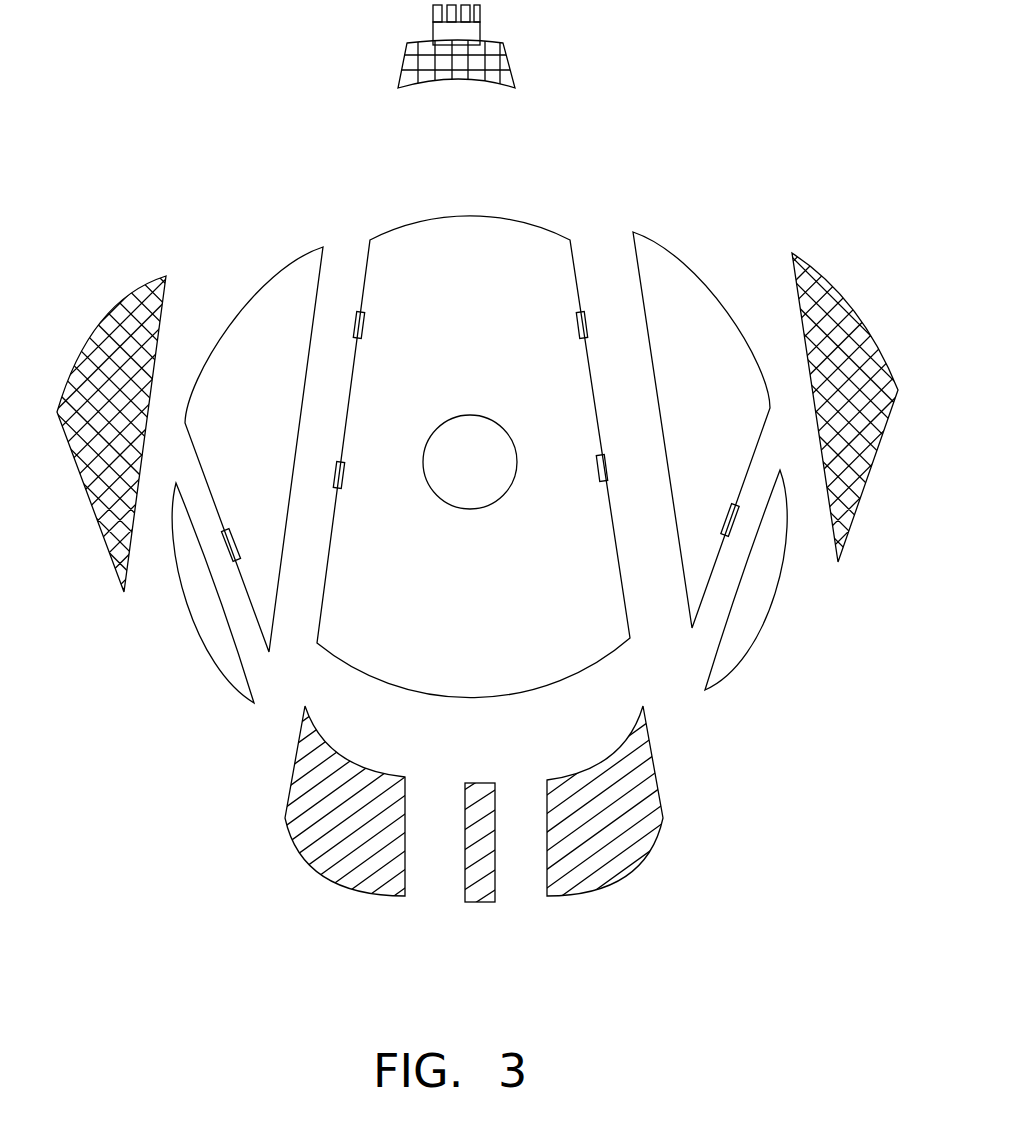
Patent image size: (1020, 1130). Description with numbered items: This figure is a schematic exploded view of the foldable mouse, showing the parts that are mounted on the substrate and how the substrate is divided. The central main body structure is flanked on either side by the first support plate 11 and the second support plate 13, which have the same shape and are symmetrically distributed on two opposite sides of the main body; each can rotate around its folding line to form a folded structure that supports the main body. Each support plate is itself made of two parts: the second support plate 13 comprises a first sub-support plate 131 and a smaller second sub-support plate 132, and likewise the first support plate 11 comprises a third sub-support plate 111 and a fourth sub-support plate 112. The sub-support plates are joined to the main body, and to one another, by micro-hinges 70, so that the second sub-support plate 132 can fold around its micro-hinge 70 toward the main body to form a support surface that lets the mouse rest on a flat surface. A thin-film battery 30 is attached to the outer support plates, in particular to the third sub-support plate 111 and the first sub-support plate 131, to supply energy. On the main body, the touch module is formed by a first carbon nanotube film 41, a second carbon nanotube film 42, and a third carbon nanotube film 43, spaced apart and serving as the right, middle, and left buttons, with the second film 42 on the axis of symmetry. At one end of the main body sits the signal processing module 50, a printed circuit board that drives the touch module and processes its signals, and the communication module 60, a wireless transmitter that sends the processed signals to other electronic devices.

The first support plate 11 is at (222, 527).
The third sub-support plate 111 is at (272, 642).
The fourth sub-support plate 112 is at (215, 648).
The second support plate 13 is at (745, 504).
The first sub-support plate 131 is at (693, 567).
The second sub-support plate 132 is at (743, 625).
The thin-film battery 30 is at (142, 300).
The first carbon nanotube film 41 is at (348, 857).
The second carbon nanotube film 42 is at (480, 882).
The third carbon nanotube film 43 is at (597, 865).
The signal processing module 50 is at (493, 63).
The communication module 60 is at (468, 32).
The micro-hinge 70 is at (225, 543).